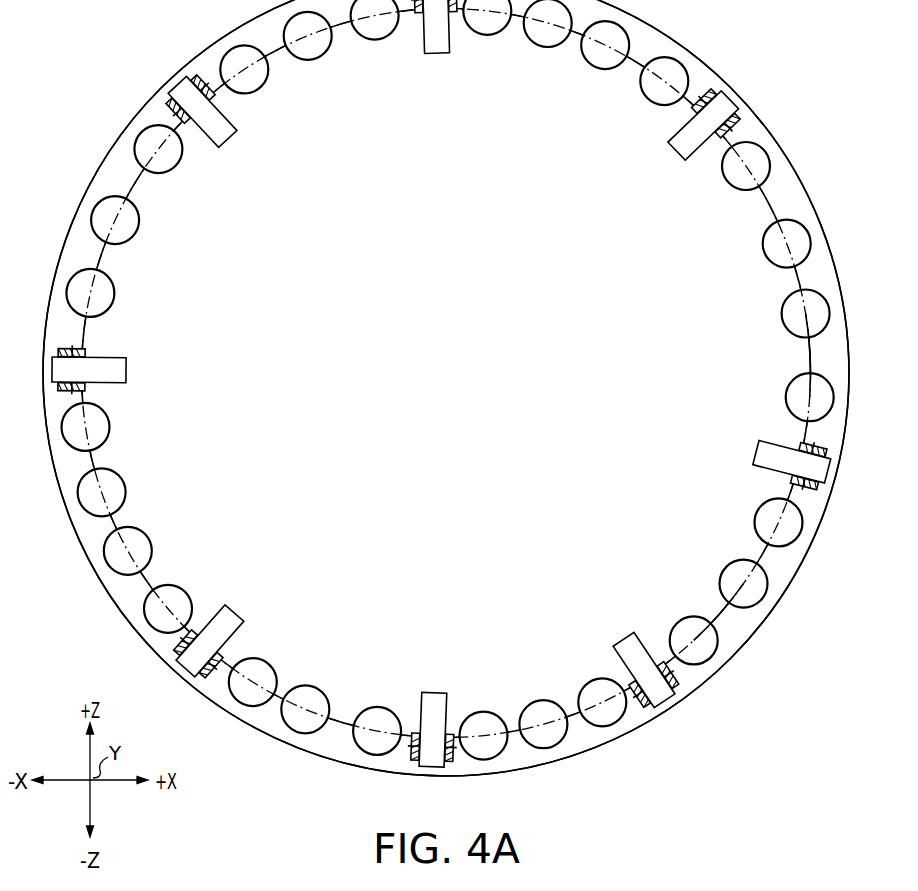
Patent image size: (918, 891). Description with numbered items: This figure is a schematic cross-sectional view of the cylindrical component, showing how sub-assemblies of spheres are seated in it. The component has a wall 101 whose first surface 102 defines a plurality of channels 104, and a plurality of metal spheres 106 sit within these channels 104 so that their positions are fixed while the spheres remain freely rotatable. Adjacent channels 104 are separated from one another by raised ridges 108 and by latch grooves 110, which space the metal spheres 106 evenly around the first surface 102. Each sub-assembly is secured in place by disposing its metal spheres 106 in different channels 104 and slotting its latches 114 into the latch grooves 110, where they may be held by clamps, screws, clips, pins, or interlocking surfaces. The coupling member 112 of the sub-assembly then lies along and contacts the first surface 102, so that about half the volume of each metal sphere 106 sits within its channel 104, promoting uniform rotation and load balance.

The wall 101 is at (790, 188).
The first surface 102 is at (773, 231).
The channels 104 is at (752, 610).
The metal spheres 106 is at (757, 580).
The ridges 108 is at (803, 357).
The latch grooves 110 is at (187, 677).
The coupling member 112 is at (805, 402).
The latches 114 is at (232, 625).